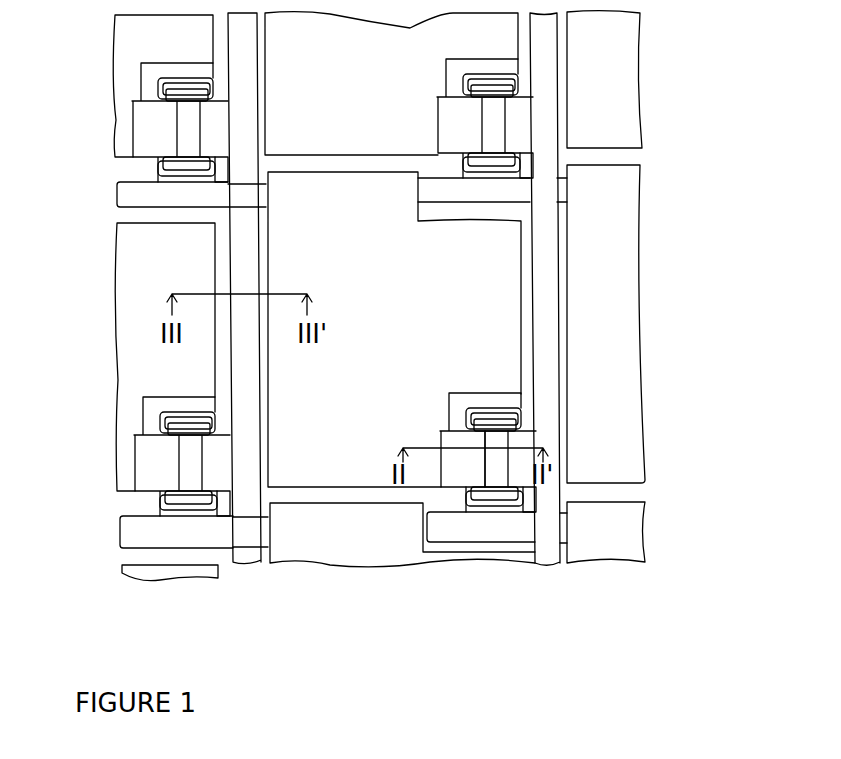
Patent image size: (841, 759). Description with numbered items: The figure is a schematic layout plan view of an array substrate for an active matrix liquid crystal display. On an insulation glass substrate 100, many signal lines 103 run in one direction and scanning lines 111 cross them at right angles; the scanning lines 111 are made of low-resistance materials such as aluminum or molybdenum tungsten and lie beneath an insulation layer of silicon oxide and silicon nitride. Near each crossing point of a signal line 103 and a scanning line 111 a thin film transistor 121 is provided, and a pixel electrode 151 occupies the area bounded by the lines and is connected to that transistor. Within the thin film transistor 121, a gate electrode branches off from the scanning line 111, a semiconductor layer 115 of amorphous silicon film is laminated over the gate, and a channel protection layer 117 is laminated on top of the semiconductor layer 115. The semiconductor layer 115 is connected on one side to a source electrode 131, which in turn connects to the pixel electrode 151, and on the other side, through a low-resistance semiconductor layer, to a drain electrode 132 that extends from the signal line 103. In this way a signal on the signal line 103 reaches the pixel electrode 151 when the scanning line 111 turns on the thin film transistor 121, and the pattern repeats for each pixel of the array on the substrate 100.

The glass substrate 100 is at (661, 116).
The signal line 103 is at (244, 547).
The scanning line 111 is at (123, 190).
The semiconductor layer 115 is at (504, 500).
The channel protection layer 117 is at (491, 490).
The thin film transistor 121 is at (468, 402).
The source electrode 131 is at (441, 437).
The drain electrode 132 is at (509, 431).
The pixel electrode 151 is at (318, 185).